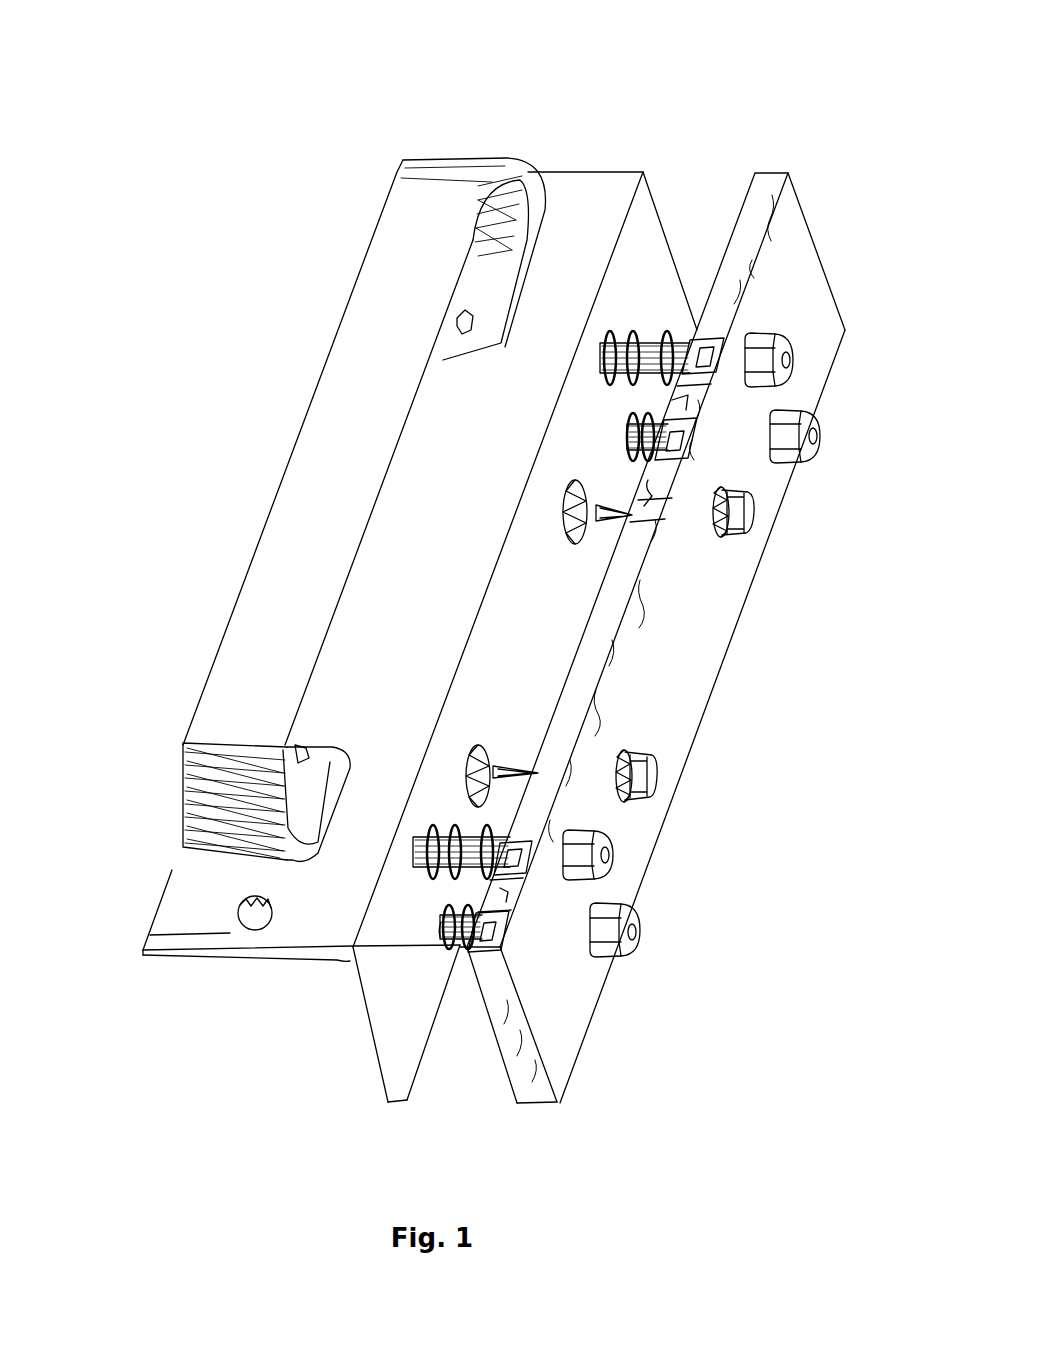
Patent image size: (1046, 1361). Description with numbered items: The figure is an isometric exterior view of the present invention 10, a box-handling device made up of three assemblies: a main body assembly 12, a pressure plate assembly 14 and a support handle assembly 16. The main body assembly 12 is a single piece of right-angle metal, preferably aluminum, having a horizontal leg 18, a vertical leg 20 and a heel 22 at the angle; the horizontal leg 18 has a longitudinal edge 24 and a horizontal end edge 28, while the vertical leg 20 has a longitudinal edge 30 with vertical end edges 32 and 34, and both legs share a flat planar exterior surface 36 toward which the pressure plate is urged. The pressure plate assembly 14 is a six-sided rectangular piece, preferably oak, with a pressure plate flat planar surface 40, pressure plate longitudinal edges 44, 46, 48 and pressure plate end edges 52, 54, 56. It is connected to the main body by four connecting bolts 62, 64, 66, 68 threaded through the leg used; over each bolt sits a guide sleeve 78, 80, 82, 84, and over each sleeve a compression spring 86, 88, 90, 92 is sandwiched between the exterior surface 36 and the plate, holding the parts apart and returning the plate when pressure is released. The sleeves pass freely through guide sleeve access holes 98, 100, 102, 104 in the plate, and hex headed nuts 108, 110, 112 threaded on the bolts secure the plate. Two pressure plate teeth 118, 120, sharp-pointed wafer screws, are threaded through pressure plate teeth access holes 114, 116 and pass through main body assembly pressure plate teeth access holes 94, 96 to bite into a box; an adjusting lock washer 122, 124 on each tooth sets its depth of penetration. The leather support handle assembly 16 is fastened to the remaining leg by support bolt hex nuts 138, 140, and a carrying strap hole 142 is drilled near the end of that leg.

The present invention 10 is at (292, 130).
The main body assembly 12 is at (620, 80).
The pressure plate assembly 14 is at (783, 105).
The support handle assembly 16 is at (316, 212).
The horizontal leg 18 is at (143, 953).
The vertical leg 20 is at (357, 978).
The heel 22 is at (643, 172).
The longitudinal edge 24 is at (155, 883).
The horizontal end edge 28 is at (570, 170).
The longitudinal edge 30 is at (423, 1062).
The vertical end edge 32 is at (660, 206).
The vertical end edge 34 is at (377, 1077).
The flat planar exterior surface 36 is at (217, 925).
The pressure plate flat planar surface 40 is at (690, 712).
The pressure plate longitudinal edge 44 is at (730, 647).
The pressure plate longitudinal edge 46 is at (644, 560).
The pressure plate longitudinal edge 48 is at (603, 575).
The pressure plate end edge 52 is at (800, 203).
The pressure plate end edge 54 is at (547, 1080).
The pressure plate end edge 56 is at (515, 1095).
The connecting bolt 62 is at (607, 855).
The connecting bolt 64 is at (787, 360).
The connecting bolt 66 is at (633, 936).
The connecting bolt 68 is at (813, 436).
The guide sleeve 78 is at (600, 368).
The guide sleeve 80 is at (288, 821).
The guide sleeve 82 is at (643, 427).
The guide sleeve 84 is at (453, 942).
The compression spring 86 is at (668, 342).
The compression spring 88 is at (288, 839).
The compression spring 90 is at (640, 453).
The compression spring 92 is at (440, 936).
The main body assembly pressure plate teeth access hole 94 is at (595, 517).
The main body assembly pressure plate teeth access hole 96 is at (335, 705).
The guide sleeve access hole 98 is at (710, 343).
The guide sleeve access hole 100 is at (523, 870).
The guide sleeve access hole 102 is at (777, 461).
The guide sleeve access hole 104 is at (500, 930).
The hex headed nut 108 is at (787, 340).
The hex headed nut 110 is at (813, 410).
The hex headed nut 112 is at (633, 905).
The pressure plate teeth access hole 114 is at (663, 519).
The pressure plate teeth access hole 116 is at (344, 691).
The pressure plate tooth 118 is at (760, 514).
The pressure plate tooth 120 is at (650, 754).
The adjusting lock washer 122 is at (727, 536).
The adjusting lock washer 124 is at (632, 791).
The support bolt hex nut 138 is at (468, 308).
The support bolt hex nut 140 is at (207, 727).
The carrying strap hole 142 is at (247, 908).